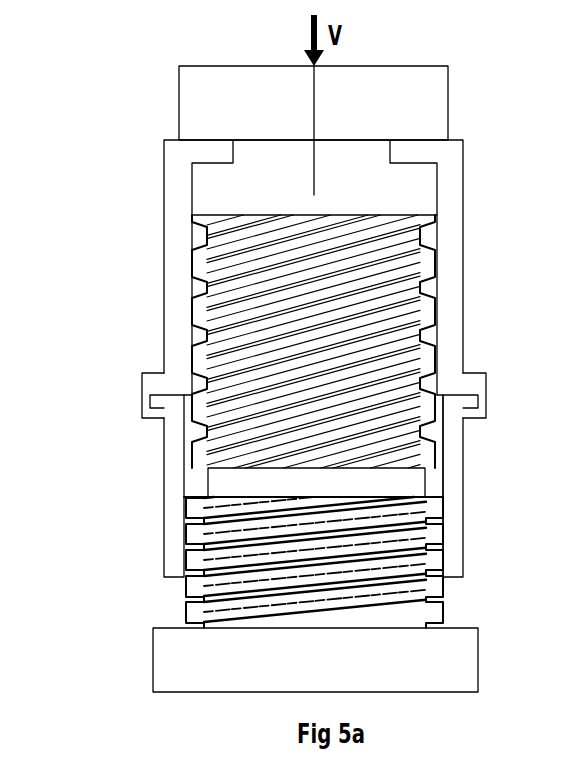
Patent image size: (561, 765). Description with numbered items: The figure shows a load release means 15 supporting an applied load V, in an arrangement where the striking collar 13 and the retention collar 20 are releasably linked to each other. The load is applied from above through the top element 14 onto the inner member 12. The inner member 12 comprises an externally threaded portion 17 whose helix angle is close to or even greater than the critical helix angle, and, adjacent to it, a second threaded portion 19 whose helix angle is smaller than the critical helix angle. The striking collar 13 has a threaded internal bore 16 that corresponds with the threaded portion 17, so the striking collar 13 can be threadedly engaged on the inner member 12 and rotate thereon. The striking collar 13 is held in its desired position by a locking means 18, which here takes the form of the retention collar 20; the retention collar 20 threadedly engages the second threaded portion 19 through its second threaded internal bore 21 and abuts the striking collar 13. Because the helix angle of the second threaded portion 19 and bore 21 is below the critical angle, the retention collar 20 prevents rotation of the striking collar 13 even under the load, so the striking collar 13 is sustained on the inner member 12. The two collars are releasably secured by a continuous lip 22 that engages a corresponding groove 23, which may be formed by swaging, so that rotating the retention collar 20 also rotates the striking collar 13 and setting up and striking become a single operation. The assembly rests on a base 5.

The base / support 5 is at (415, 692).
The inner member 12 is at (214, 212).
The striking collar 13 is at (440, 244).
The actuating head 14 is at (403, 65).
The load release means 15 is at (160, 343).
The threaded internal bore 16 is at (190, 260).
The threaded portion 17 is at (382, 333).
The locking means 18 is at (162, 477).
The second threaded portion 19 is at (438, 597).
The retention collar 20 is at (468, 493).
The second threaded internal bore 21 is at (187, 547).
The continuous lip 22 is at (484, 414).
The groove 23 is at (488, 382).